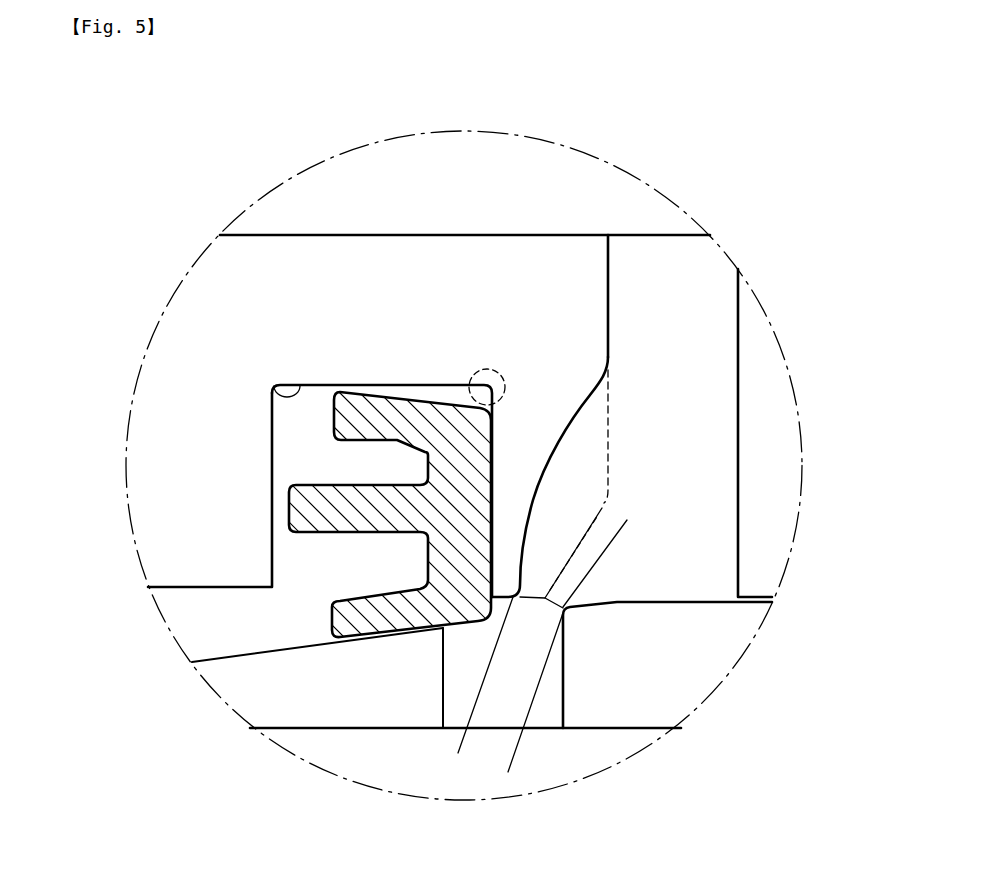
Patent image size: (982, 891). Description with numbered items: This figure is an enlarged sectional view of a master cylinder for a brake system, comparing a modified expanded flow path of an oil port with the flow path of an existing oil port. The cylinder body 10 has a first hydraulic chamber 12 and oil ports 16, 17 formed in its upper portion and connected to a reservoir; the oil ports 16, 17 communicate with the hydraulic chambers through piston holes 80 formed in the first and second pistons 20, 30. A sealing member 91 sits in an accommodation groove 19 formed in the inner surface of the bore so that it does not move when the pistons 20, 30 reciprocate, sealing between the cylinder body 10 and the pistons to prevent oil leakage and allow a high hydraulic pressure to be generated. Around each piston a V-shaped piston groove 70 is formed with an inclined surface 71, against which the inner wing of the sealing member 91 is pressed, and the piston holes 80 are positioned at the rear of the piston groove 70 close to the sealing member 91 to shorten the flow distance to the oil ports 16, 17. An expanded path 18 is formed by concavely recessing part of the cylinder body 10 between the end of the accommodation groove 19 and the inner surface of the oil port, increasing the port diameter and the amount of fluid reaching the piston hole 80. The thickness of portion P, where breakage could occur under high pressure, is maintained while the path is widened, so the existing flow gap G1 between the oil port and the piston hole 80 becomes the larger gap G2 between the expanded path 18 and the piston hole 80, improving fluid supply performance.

The cylinder body 10 is at (772, 419).
The first hydraulic chamber 12 is at (465, 782).
The first oil port 16 is at (525, 288).
The second oil port 17 is at (690, 312).
The expanded path 18 is at (571, 486).
The accommodation groove 19 is at (272, 393).
The first piston 20 is at (689, 677).
The second piston 30 is at (700, 690).
The piston groove 70 is at (204, 616).
The inclined surface 71 is at (252, 650).
The piston hole 80 is at (454, 690).
The sealing member 91 is at (290, 511).
The portion P is at (500, 372).
The flow gap G1 is at (645, 540).
The gap G2 is at (507, 768).